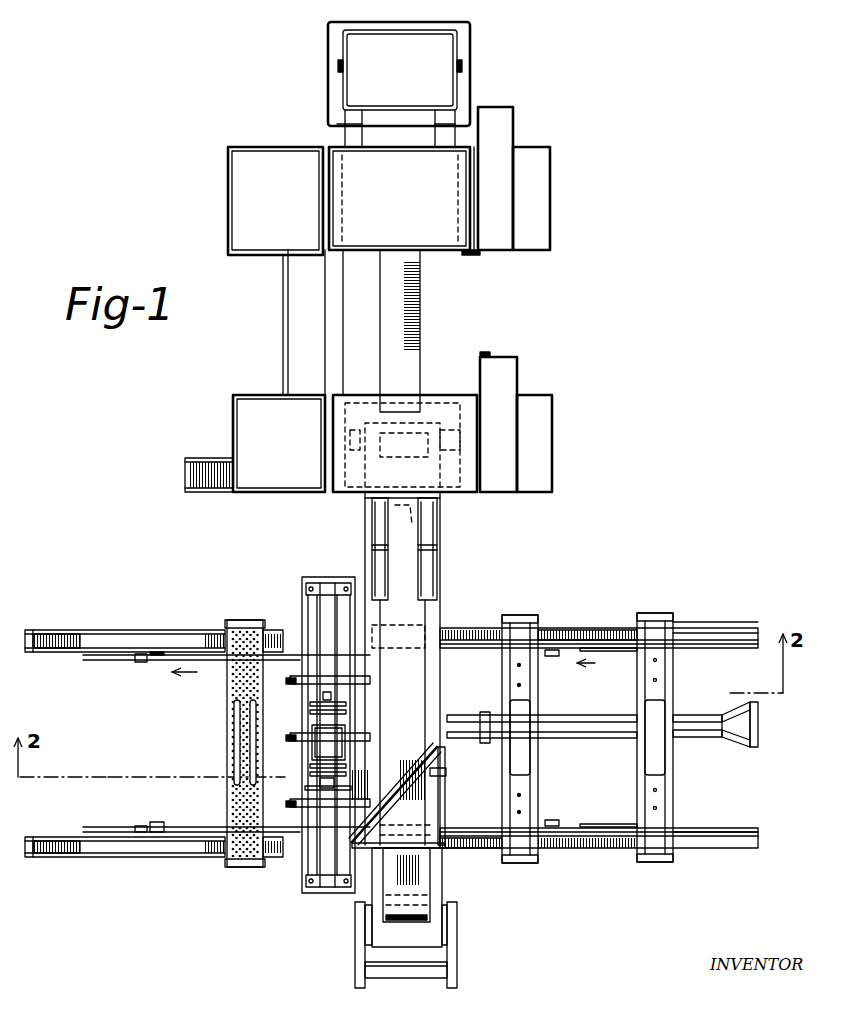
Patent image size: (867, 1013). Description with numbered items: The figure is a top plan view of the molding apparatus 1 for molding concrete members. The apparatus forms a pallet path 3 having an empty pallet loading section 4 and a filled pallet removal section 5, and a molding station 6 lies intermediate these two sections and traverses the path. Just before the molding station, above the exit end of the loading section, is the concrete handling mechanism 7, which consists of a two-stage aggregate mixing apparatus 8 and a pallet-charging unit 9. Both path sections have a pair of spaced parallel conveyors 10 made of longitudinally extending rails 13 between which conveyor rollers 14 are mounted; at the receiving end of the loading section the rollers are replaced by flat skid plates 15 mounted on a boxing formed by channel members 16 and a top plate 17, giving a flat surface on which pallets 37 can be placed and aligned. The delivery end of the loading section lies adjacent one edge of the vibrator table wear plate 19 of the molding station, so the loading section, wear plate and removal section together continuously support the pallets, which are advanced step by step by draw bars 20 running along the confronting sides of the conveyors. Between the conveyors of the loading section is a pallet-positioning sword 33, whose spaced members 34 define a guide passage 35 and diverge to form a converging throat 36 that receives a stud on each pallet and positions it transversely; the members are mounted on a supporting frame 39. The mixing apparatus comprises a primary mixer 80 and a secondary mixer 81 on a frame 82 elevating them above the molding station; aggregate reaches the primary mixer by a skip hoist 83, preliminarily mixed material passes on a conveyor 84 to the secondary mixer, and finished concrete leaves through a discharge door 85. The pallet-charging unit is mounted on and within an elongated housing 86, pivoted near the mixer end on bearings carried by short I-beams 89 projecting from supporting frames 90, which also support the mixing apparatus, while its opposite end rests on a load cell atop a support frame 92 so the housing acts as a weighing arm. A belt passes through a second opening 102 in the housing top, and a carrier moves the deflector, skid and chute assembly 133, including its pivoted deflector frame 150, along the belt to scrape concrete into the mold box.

The molding apparatus 1 is at (599, 543).
The pallet path 3 is at (713, 660).
The empty pallet loading section 4 is at (596, 620).
The filled pallet removal section 5 is at (197, 618).
The molding station 6 is at (296, 600).
The concrete handling mechanism 7 is at (452, 601).
The two-stage aggregate mixing apparatus 8 is at (527, 260).
The pallet-charging unit 9 is at (418, 672).
The conveyors 10 is at (620, 658).
The rails 13 is at (136, 630).
The conveyor rollers 14 is at (40, 634).
The skid plates 15 is at (738, 626).
The channel members 16 is at (752, 618).
The top plate 17 is at (745, 642).
The vibrator table wear plate 19 is at (288, 735).
The draw bars 20 is at (562, 656).
The pallet-positioning sword 33 is at (689, 738).
The spaced members 34 is at (712, 715).
The guide passage 35 is at (574, 728).
The converging throat 36 is at (752, 718).
The pallets 37 is at (545, 770).
The supporting frame 39 is at (486, 712).
The primary mixer 80 is at (420, 181).
The secondary mixer 81 is at (431, 416).
The frame 82 is at (468, 258).
The skip hoist 83 is at (434, 78).
The conveyor 84 is at (383, 313).
The discharge door 85 is at (442, 522).
The elongated housing 86 is at (445, 592).
The short I-beams 89 is at (455, 440).
The supporting frames 90 is at (483, 374).
The support frame 92 is at (445, 965).
The second opening 102 is at (420, 933).
The deflector, skid and chute assembly 133 is at (446, 771).
The deflector frame 150 is at (403, 718).